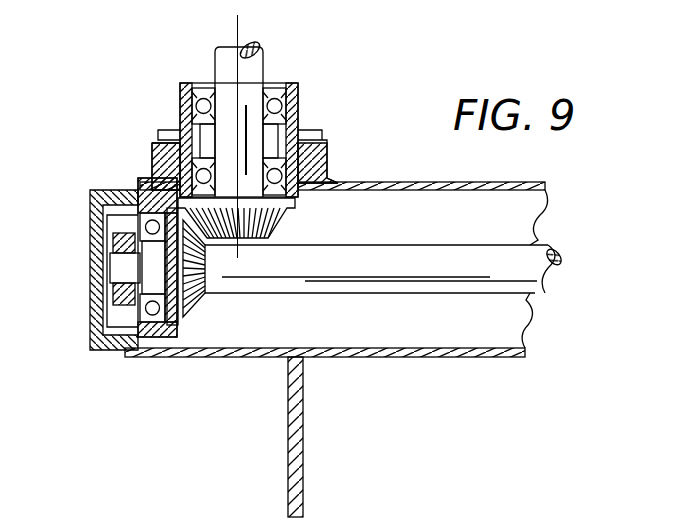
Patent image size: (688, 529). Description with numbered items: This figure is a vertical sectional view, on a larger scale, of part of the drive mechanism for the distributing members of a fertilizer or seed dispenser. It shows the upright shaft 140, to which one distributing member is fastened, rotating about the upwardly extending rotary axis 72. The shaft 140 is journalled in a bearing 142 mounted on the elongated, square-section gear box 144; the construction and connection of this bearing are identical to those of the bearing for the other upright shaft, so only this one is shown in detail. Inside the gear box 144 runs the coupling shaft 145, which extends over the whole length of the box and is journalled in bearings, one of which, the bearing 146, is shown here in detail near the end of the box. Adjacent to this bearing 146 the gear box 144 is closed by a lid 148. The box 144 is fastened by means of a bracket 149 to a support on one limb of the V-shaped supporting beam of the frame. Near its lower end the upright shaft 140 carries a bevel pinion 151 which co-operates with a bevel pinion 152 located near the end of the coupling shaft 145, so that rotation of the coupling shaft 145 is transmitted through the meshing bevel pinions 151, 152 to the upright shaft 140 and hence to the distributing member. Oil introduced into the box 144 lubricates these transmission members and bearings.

The rotary axis 72 is at (238, 27).
The upright shaft 140 is at (216, 62).
The bearing 142 is at (180, 102).
The gear box 144 is at (517, 219).
The coupling shaft 145 is at (528, 273).
The bearing 146 is at (123, 350).
The lid 148 is at (90, 216).
The bracket 149 is at (290, 458).
The bevel pinion 151 is at (276, 222).
The bevel pinion 152 is at (197, 328).